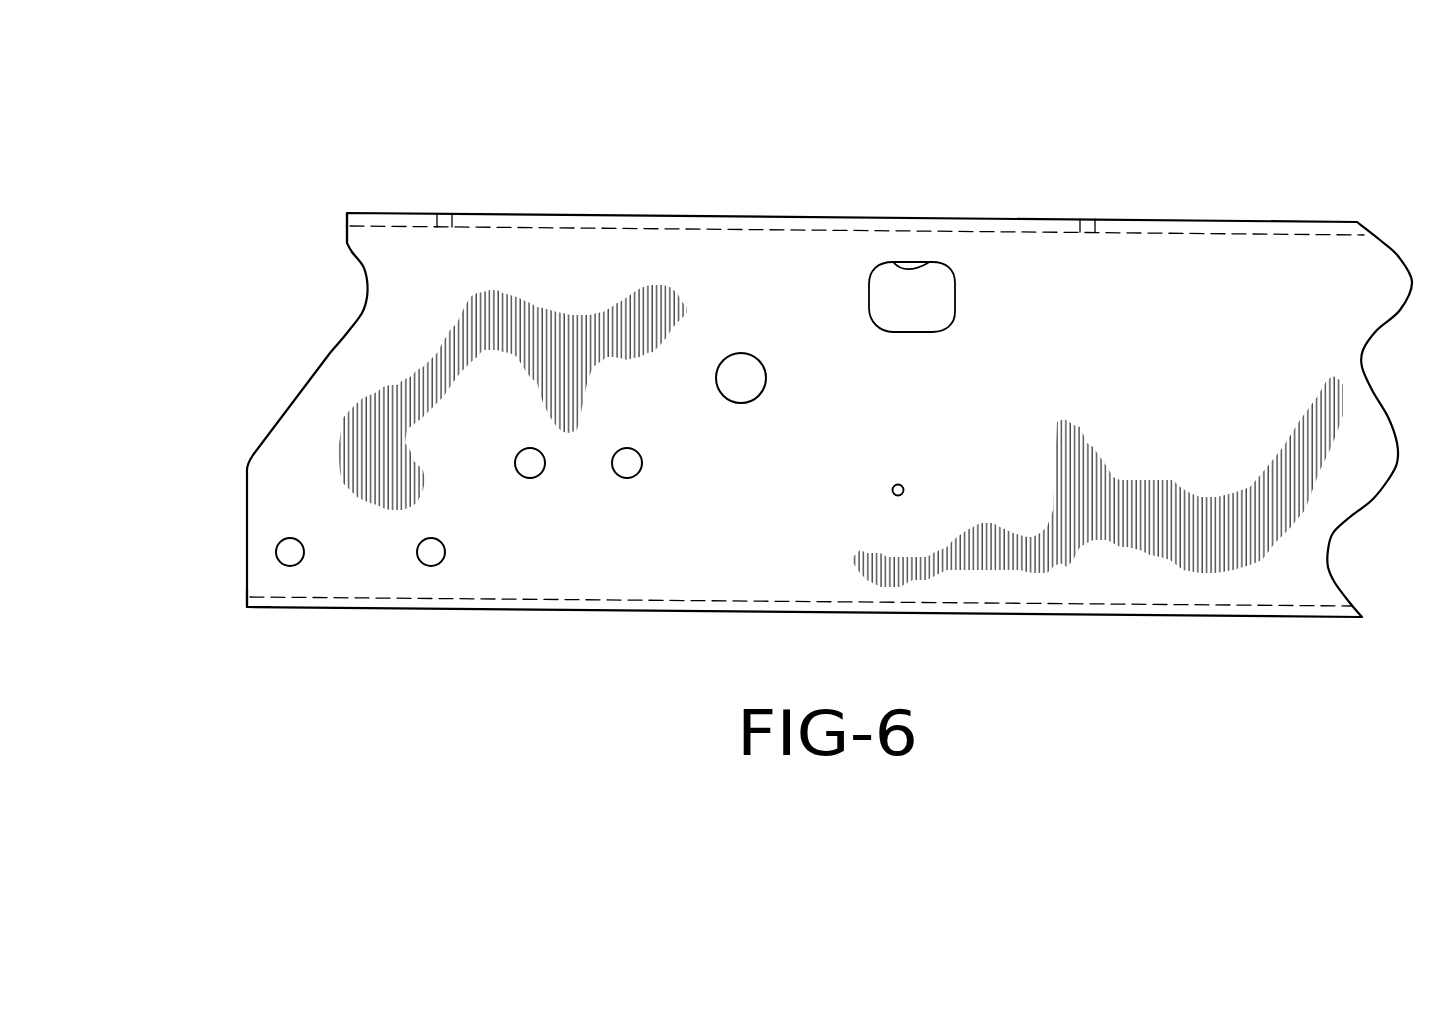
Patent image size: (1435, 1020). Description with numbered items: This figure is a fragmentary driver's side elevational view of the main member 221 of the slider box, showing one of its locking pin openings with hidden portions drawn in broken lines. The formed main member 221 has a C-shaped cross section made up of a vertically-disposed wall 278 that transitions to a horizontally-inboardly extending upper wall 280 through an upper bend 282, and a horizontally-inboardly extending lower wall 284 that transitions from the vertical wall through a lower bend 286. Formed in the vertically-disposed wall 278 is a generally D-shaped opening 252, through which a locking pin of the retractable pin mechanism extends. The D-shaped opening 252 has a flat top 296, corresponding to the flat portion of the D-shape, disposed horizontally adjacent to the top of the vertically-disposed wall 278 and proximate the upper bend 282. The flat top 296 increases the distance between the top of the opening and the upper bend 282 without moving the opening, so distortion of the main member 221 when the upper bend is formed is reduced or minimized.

The main member 221 is at (1103, 217).
The upper wall 280 is at (402, 217).
The upper bend 282 is at (347, 214).
The lower wall 284 is at (383, 601).
The lower bend 286 is at (247, 605).
The flat top 296 is at (893, 262).
The D-shaped opening 252 is at (903, 332).
The vertically-disposed wall 278 is at (1229, 448).